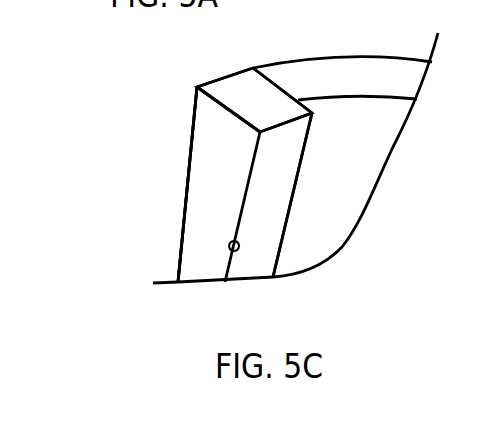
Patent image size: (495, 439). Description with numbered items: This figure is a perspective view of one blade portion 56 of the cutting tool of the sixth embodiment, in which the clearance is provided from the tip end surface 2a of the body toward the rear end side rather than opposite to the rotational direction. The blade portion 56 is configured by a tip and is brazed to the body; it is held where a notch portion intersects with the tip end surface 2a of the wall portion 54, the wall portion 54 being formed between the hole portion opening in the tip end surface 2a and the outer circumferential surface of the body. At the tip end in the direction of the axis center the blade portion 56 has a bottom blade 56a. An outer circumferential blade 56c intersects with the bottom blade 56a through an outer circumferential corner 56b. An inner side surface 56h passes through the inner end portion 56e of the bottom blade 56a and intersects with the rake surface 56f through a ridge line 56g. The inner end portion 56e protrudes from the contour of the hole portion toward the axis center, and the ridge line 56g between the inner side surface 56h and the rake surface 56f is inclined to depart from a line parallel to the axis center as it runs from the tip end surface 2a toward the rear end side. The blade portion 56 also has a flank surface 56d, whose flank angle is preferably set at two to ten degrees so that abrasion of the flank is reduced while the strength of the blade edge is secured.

The tip end surface 2a is at (365, 67).
The wall portion 54 is at (322, 238).
The blade portion 56 is at (199, 61).
The bottom blade 56a is at (227, 108).
The outer circumferential corner 56b is at (197, 86).
The outer circumferential blade 56c is at (183, 190).
The flank surface 56d is at (252, 88).
The inner end portion 56e is at (258, 133).
The rake surface 56f is at (207, 170).
The ridge line 56g is at (233, 242).
The inner side surface 56h is at (287, 175).